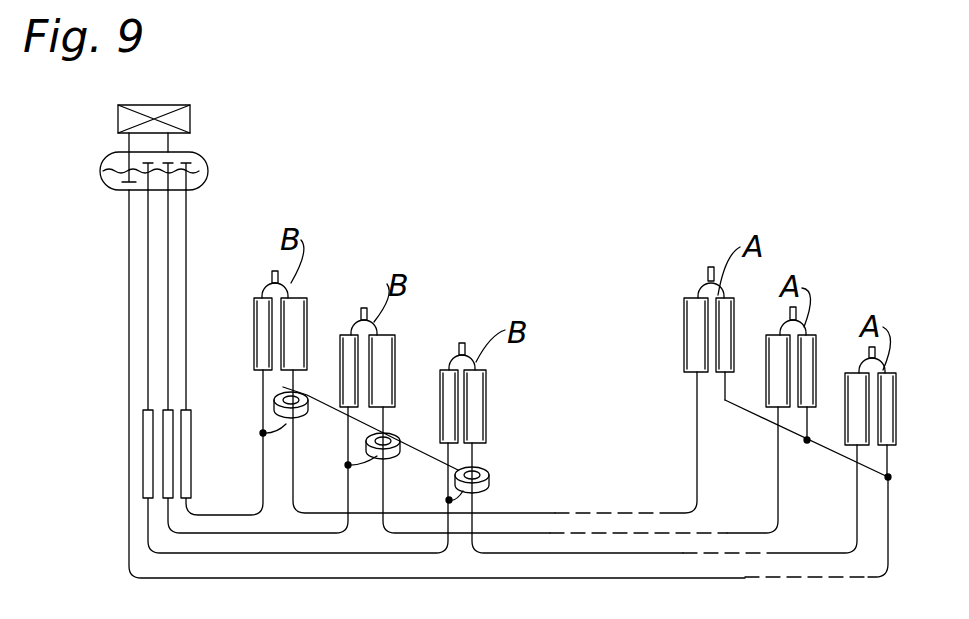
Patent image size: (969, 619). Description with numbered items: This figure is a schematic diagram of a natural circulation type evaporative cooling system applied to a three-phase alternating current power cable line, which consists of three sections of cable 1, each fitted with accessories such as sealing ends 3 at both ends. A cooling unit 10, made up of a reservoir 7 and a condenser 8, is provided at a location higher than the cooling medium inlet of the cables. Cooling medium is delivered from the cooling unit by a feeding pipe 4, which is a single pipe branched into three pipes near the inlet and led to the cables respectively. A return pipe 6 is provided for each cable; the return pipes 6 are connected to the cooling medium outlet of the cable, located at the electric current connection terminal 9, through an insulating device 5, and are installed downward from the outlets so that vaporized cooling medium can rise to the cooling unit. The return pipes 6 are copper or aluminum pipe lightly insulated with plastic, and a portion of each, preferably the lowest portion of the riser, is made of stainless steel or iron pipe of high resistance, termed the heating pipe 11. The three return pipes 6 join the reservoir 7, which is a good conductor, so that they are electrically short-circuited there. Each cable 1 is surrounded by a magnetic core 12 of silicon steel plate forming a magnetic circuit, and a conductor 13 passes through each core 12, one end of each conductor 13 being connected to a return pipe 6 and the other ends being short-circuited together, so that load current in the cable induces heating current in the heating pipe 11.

The electric power cable 1 is at (560, 553).
The sealing end 3 is at (329, 276).
The feeding pipe 4 is at (595, 578).
The insulating device 5 is at (253, 328).
The return pipe 6 is at (178, 226).
The reservoir 7 is at (220, 147).
The condenser 8 is at (192, 117).
The electric current connection terminal 9 is at (274, 271).
The cooling unit 10 is at (253, 78).
The heating pipe 11 is at (185, 453).
The magnetic core 12 is at (296, 423).
The conductor 13 is at (262, 435).